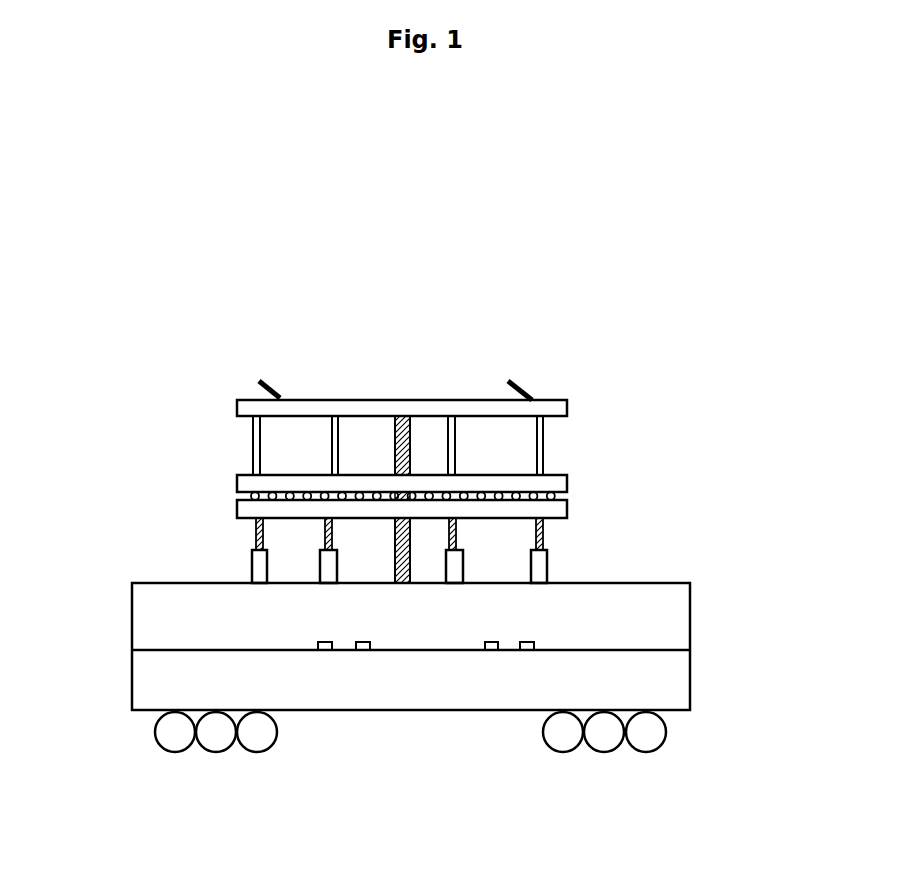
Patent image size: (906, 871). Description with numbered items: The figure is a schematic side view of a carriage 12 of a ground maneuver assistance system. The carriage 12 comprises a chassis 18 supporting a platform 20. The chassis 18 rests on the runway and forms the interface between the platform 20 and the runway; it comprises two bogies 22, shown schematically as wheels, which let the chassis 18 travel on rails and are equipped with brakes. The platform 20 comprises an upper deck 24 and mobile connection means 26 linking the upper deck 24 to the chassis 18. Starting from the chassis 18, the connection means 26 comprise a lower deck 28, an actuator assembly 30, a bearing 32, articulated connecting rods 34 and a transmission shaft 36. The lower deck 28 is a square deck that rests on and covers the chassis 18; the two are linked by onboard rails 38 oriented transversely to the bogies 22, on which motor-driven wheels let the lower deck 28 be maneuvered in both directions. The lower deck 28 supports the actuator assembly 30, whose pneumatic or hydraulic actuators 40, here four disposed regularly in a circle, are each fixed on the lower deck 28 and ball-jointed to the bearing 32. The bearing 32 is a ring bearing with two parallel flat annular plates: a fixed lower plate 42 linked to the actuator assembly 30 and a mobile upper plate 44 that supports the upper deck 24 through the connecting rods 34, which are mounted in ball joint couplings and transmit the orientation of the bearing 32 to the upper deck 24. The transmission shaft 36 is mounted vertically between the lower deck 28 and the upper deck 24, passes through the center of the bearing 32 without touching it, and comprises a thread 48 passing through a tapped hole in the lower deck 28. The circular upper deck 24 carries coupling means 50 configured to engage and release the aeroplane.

The carriage 12 is at (637, 253).
The chassis 18 is at (112, 695).
The platform 20 is at (702, 458).
The bogies 22 is at (168, 745).
The upper deck 24 is at (243, 398).
The mobile connection means 26 is at (168, 508).
The lower deck 28 is at (673, 613).
The actuator assembly 30 is at (553, 545).
The bearing 32 is at (572, 495).
The articulated connecting rods 34 is at (457, 462).
The transmission shaft 36 is at (415, 440).
The onboard rails 38 is at (362, 652).
The actuators 40 is at (450, 565).
The fixed lower plate 42 is at (238, 508).
The mobile upper plate 44 is at (250, 480).
The thread 48 is at (395, 447).
The coupling means 50 is at (277, 385).